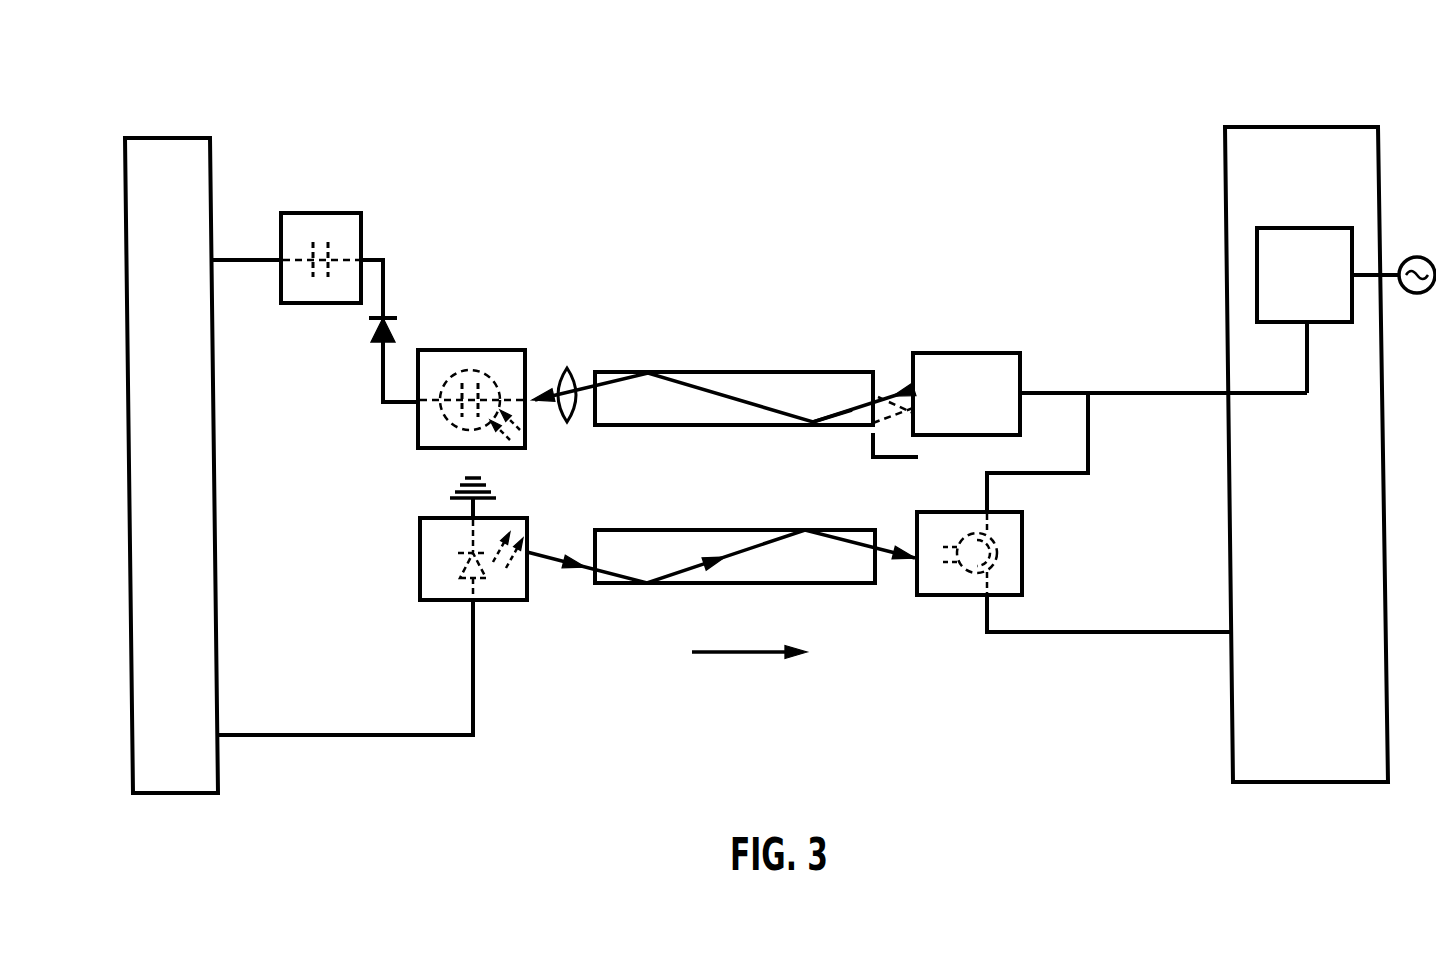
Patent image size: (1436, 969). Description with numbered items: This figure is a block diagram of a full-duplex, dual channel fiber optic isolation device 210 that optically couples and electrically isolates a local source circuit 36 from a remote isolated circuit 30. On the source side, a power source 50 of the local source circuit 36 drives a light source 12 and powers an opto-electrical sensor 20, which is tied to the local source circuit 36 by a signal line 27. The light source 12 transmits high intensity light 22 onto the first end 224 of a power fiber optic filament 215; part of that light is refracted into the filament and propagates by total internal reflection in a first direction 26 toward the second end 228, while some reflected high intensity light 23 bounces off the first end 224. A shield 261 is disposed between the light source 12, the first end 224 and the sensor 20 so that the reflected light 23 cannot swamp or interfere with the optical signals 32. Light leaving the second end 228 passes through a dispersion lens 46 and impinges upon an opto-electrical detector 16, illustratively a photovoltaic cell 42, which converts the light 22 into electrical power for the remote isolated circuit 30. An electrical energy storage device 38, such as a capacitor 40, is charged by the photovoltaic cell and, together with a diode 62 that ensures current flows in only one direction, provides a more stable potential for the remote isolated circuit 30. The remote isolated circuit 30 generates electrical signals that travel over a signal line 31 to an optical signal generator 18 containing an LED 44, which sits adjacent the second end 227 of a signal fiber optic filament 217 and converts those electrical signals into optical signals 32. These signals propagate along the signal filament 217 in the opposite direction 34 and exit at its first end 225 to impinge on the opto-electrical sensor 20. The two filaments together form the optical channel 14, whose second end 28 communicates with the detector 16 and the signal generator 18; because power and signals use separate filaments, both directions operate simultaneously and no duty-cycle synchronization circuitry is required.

The light source 12 is at (972, 352).
The optical channel 14 is at (648, 425).
The opto-electrical detector 16 is at (497, 350).
The optical signal generator 18 is at (440, 601).
The opto-electrical sensor 20 is at (1085, 517).
The high intensity light 22 is at (850, 407).
The reflected high intensity light 23 is at (890, 418).
The first direction 26 is at (768, 298).
The signal line 27 is at (1122, 634).
The second end 28 is at (247, 259).
The remote isolated circuit 30 is at (170, 122).
The signal line 31 is at (248, 737).
The optical signals 32 is at (773, 547).
The light beam direction 34 is at (743, 654).
The local source circuit 36 is at (1300, 105).
The electrical energy storage device 38 is at (328, 213).
The capacitor 40 is at (343, 257).
The photovoltaic cell 42 is at (460, 370).
The light emitting diode 44 is at (463, 553).
The dispersion lens 46 is at (570, 425).
The power source 50 is at (1328, 228).
The diode 62 is at (373, 342).
The full-duplex, dual channel fiber optic isolation device 210 is at (827, 112).
The power fiber optic filament 215 is at (830, 372).
The signal fiber optic filament 217 is at (627, 584).
The first end 224 is at (874, 371).
The first end 225 is at (875, 584).
The second end 227 is at (597, 584).
The second end 228 is at (595, 372).
The shield 261 is at (903, 461).